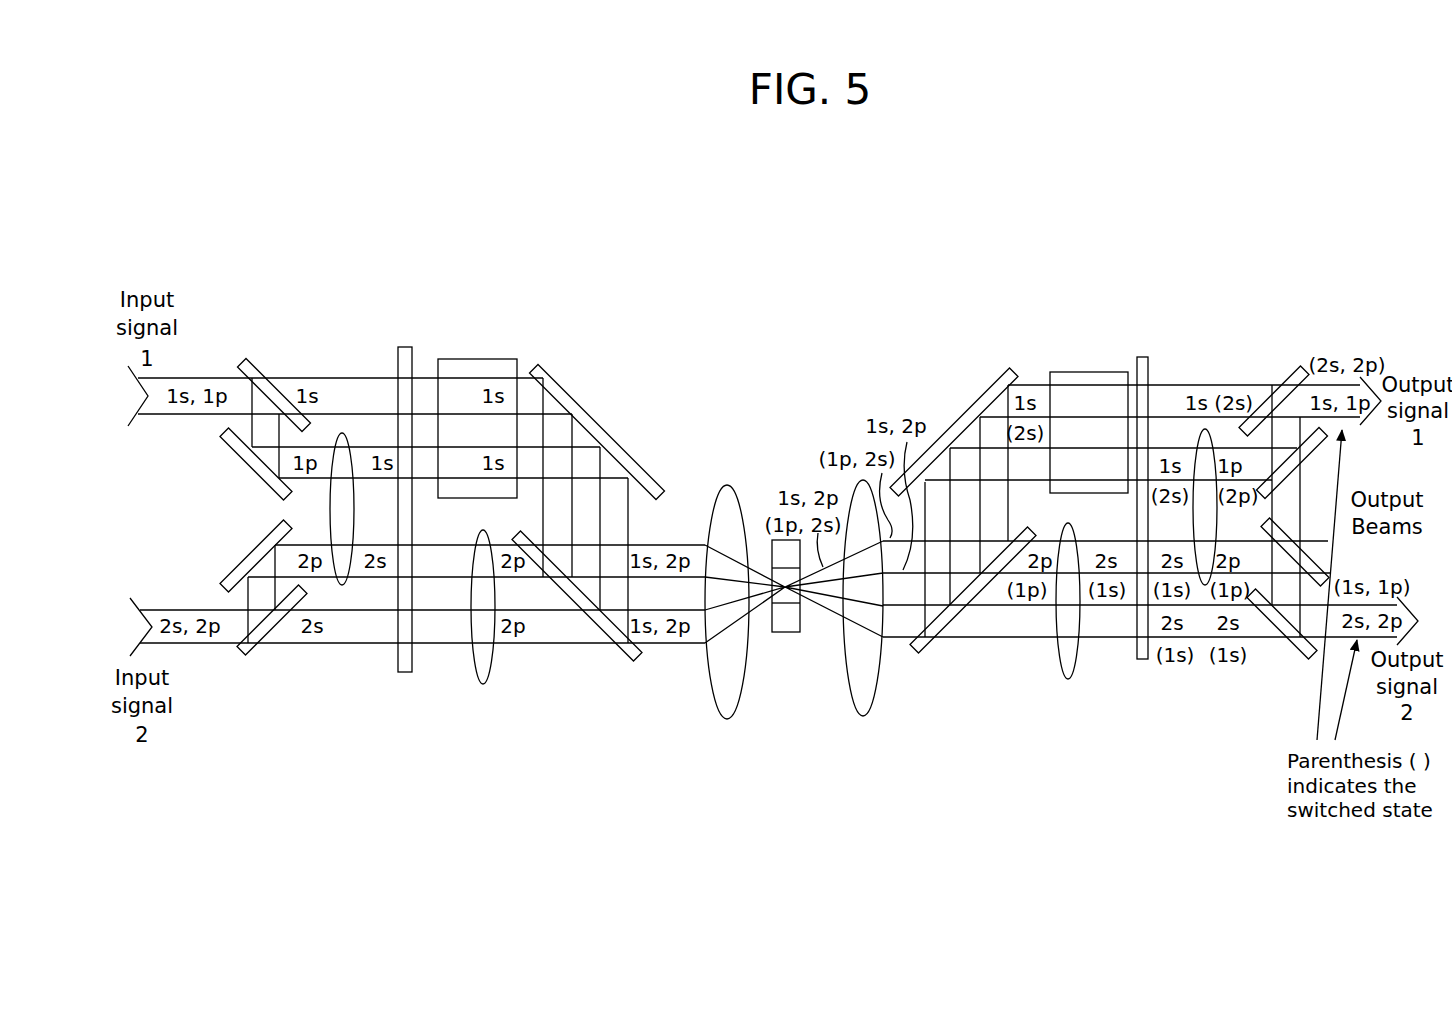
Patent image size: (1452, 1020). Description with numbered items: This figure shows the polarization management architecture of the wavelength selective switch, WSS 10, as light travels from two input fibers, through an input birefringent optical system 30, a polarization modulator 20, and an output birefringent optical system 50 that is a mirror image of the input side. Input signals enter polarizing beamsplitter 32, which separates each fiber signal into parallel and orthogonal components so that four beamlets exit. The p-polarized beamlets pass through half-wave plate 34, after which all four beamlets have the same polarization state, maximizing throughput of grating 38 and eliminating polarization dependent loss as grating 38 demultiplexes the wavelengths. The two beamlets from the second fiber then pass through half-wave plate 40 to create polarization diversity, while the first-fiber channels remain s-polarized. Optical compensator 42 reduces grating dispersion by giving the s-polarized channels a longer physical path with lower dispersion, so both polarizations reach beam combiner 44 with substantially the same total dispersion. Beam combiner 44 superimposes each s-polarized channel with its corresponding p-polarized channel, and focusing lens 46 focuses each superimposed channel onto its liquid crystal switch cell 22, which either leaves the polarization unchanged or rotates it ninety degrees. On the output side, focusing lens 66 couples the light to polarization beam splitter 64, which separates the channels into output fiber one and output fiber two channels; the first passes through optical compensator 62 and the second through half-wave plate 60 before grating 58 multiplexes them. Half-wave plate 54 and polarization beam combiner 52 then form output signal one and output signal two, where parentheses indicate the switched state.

The WSS 10 is at (1073, 223).
The polarization modulator 20 is at (787, 635).
The liquid crystal switch cell 22 is at (782, 598).
The input birefringent optical system 30 is at (438, 285).
The polarizing beamsplitter 32 is at (263, 358).
The half-wave plate 34 is at (340, 433).
The grating 38 is at (395, 655).
The half-wave plate 40 is at (480, 662).
The optical compensator 42 is at (503, 360).
The beam combiner 44 is at (593, 415).
The focusing lens 46 is at (733, 668).
The output birefringent optical system 50 is at (1133, 270).
The polarization beam combiner 52 is at (1285, 368).
The half-wave plate 54 is at (1202, 522).
The grating 58 is at (1138, 647).
The half-wave plate 60 is at (1070, 652).
The optical compensator 62 is at (1053, 370).
The polarization beam splitter 64 is at (963, 418).
The focusing lens 66 is at (855, 658).